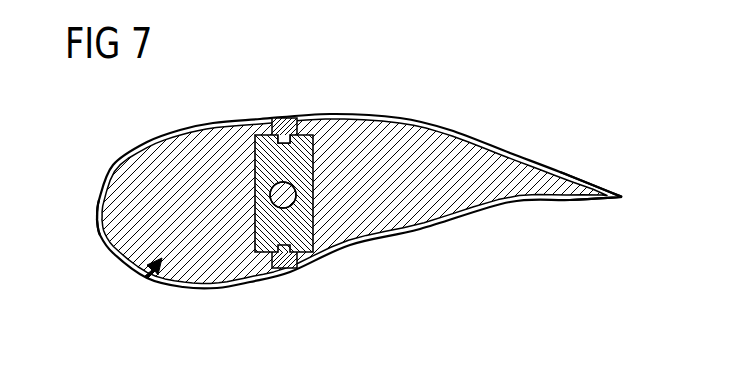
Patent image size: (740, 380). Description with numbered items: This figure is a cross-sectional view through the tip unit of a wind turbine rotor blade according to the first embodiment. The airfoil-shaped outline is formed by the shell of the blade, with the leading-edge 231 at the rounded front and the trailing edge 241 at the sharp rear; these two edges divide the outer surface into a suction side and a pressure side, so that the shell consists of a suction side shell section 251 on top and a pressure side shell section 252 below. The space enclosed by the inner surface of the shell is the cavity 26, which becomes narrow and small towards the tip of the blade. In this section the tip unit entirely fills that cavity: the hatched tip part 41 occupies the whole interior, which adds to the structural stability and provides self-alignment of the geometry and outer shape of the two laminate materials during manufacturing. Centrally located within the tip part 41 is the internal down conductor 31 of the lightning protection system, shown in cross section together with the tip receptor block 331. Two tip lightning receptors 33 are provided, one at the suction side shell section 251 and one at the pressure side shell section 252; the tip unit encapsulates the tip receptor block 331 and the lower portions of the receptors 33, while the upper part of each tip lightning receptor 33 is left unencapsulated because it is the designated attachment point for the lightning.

The cavity 26 is at (138, 283).
The internal down conductor 31 is at (273, 195).
The tip lightning receptor 33 is at (287, 120).
The tip part 41 is at (383, 217).
The leading-edge 231 is at (93, 222).
The trailing edge 241 is at (622, 197).
The suction side shell section 251 is at (392, 120).
The pressure side shell section 252 is at (223, 290).
The tip receptor block 331 is at (255, 134).